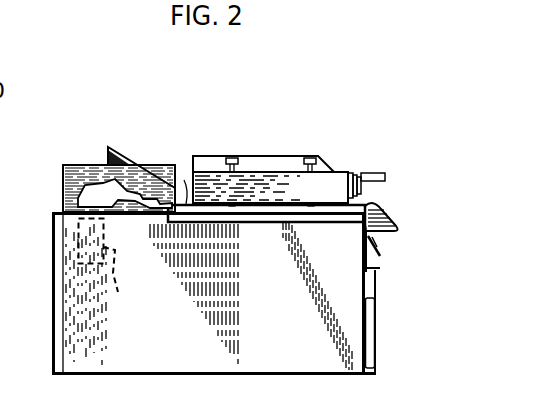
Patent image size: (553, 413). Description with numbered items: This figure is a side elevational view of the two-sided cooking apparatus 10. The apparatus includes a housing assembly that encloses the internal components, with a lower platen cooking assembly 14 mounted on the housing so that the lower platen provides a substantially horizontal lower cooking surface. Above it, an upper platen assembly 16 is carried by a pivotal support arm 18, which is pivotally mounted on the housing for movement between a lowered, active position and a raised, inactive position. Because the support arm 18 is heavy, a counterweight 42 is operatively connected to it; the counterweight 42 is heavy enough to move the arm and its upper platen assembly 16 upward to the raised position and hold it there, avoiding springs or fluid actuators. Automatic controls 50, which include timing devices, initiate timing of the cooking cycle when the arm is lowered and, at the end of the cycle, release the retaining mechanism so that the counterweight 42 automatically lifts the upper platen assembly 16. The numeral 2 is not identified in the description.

The housing / main body 2 is at (53, 314).
The two-sided cooking apparatus 10 is at (371, 131).
The lower platen cooking assembly 14 is at (357, 207).
The upper platen assembly 16 is at (264, 157).
The pivotal support arm 18 is at (160, 166).
The counterweight 42 is at (116, 291).
The automatic controls 50 is at (380, 268).